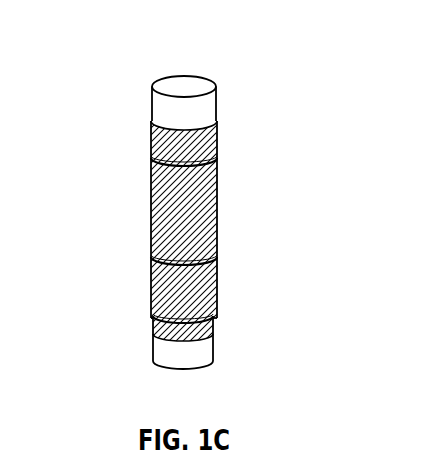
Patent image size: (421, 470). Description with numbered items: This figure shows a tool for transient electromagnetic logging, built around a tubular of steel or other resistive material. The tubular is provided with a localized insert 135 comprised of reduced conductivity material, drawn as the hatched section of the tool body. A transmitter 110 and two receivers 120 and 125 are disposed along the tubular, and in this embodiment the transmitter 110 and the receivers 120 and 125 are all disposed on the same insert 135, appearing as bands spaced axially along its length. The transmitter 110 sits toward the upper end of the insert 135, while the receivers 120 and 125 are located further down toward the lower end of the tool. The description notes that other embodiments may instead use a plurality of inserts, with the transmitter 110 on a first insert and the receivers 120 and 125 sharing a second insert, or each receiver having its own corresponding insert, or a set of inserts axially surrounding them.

The transmitter 110 is at (150, 158).
The receiver 120 is at (150, 260).
The receiver 125 is at (151, 318).
The localized insert 135 is at (217, 196).